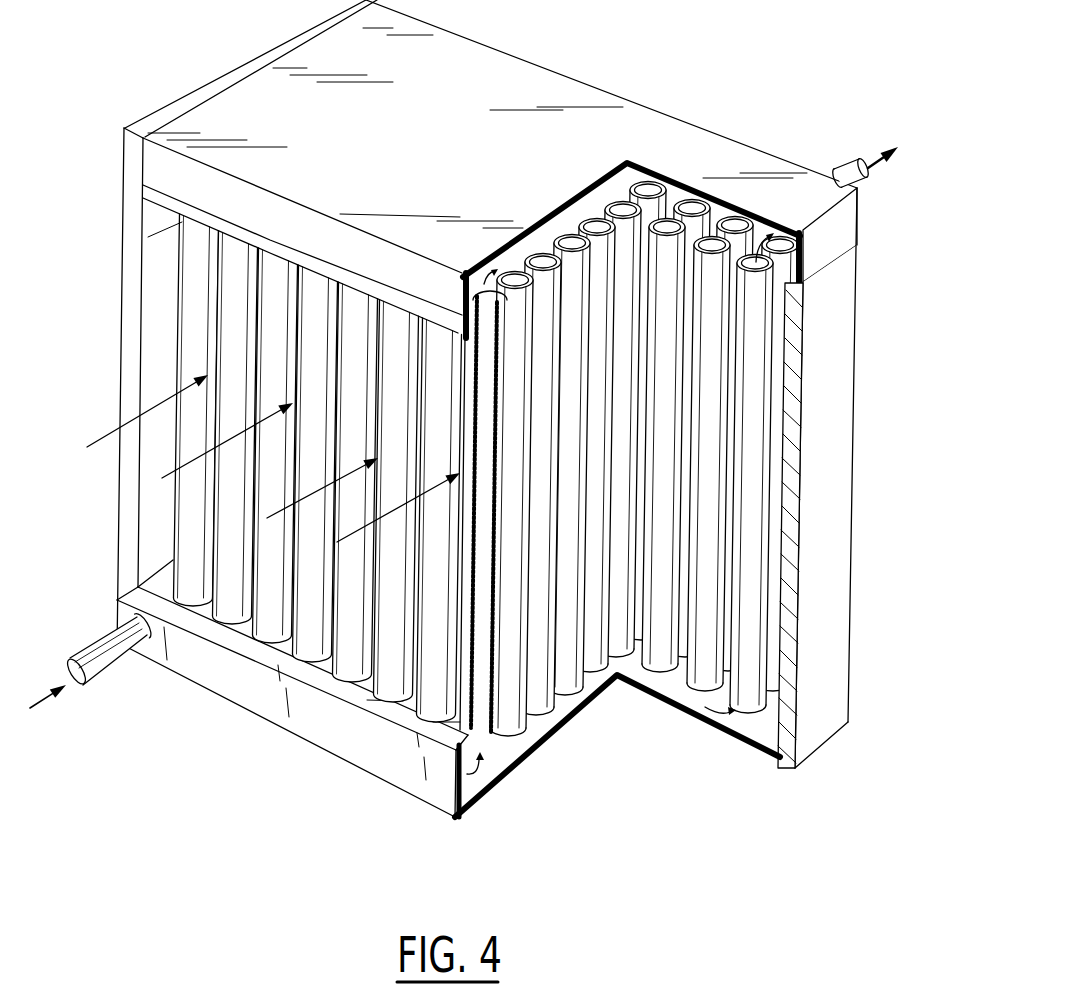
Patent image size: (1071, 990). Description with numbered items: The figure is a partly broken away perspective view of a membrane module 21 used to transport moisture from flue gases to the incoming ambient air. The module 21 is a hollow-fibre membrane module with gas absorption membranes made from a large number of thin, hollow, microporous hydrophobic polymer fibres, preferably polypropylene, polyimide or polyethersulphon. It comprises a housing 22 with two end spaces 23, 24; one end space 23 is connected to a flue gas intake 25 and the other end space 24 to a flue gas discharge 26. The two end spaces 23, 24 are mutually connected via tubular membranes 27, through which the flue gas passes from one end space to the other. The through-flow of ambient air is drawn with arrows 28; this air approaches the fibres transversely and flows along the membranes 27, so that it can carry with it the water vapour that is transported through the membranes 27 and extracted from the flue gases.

The module 21 is at (716, 73).
The housing 22 is at (127, 280).
The end space 23 is at (567, 697).
The end space 24 is at (568, 222).
The flue gas intake 25 is at (108, 662).
The flue gas discharge 26 is at (847, 170).
The tubular membranes 27 is at (623, 498).
The arrows 28 is at (193, 455).